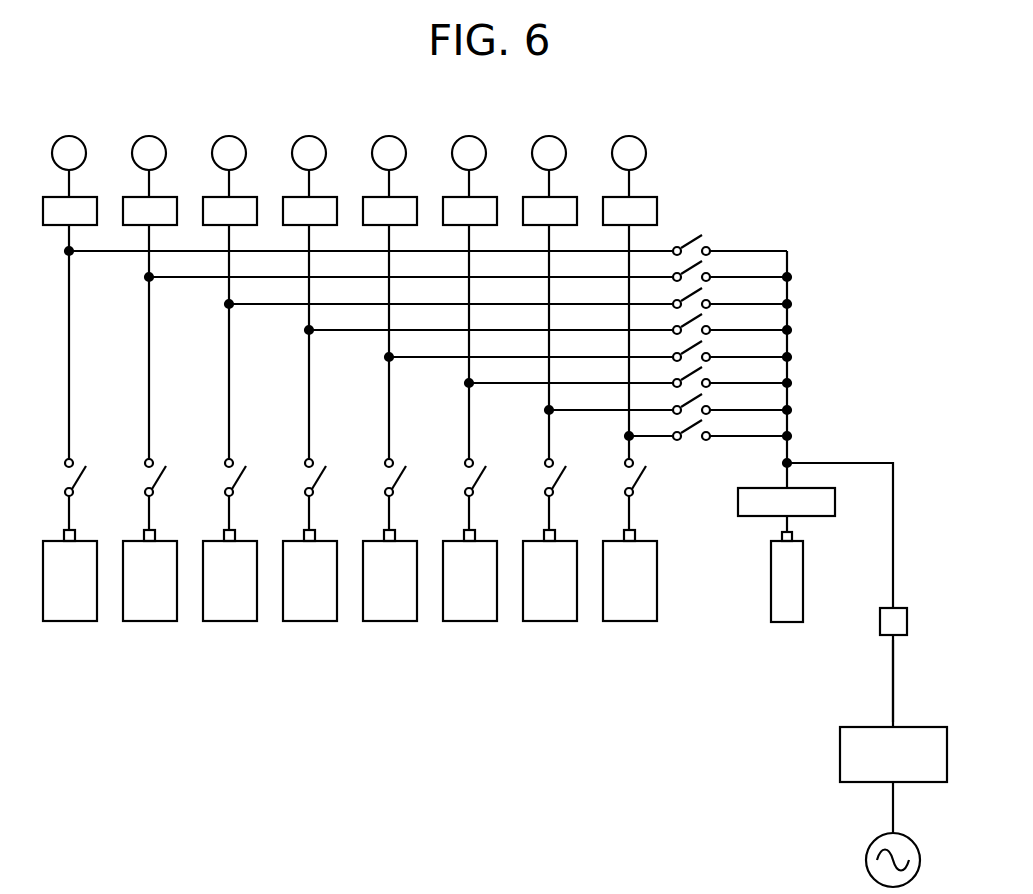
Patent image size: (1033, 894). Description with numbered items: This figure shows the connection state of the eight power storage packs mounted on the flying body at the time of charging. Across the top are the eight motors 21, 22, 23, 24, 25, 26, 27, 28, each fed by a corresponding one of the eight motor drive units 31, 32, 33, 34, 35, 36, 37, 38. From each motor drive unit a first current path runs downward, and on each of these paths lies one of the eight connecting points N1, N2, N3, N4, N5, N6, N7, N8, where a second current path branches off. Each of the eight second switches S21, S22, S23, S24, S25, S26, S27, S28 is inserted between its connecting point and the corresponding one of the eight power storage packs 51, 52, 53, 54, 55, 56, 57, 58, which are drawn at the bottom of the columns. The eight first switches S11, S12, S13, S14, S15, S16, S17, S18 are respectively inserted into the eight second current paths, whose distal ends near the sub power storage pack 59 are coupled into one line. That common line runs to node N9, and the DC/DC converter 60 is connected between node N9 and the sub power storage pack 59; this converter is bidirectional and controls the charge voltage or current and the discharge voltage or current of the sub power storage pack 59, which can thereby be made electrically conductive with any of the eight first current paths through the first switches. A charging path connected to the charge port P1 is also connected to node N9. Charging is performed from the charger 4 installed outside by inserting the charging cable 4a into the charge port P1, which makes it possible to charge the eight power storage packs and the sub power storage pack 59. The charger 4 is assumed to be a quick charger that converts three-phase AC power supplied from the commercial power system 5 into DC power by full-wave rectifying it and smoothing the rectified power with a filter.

The motor 21 is at (82, 148).
The motor 22 is at (162, 148).
The motor 23 is at (242, 148).
The motor 24 is at (322, 148).
The motor 25 is at (402, 148).
The motor 26 is at (482, 148).
The motor 27 is at (562, 148).
The motor 28 is at (642, 148).
The motor drive unit 31 is at (89, 197).
The motor drive unit 32 is at (169, 197).
The motor drive unit 33 is at (249, 197).
The motor drive unit 34 is at (329, 197).
The motor drive unit 35 is at (409, 197).
The motor drive unit 36 is at (489, 197).
The motor drive unit 37 is at (569, 197).
The motor drive unit 38 is at (649, 197).
The power storage pack 51 is at (84, 540).
The power storage pack 52 is at (164, 540).
The power storage pack 53 is at (244, 540).
The power storage pack 54 is at (324, 540).
The power storage pack 55 is at (404, 540).
The power storage pack 56 is at (484, 540).
The power storage pack 57 is at (564, 540).
The power storage pack 58 is at (644, 540).
The sub power storage pack 59 is at (803, 573).
The DC/DC converter 60 is at (757, 487).
The charger 4 is at (920, 727).
The charging cable 4a is at (895, 693).
The commercial power system 5 is at (906, 832).
The charge port P1 is at (905, 607).
The connecting point N1 is at (369, 342).
The connecting point N2 is at (409, 342).
The connecting point N3 is at (449, 342).
The connecting point N4 is at (489, 342).
The connecting point N5 is at (529, 342).
The connecting point N6 is at (569, 342).
The connecting point N7 is at (609, 342).
The connecting point N8 is at (649, 342).
The node N9 is at (838, 429).
The first switch S11 is at (730, 243).
The first switch S12 is at (732, 269).
The first switch S13 is at (732, 296).
The first switch S14 is at (732, 322).
The first switch S15 is at (732, 349).
The first switch S16 is at (732, 375).
The first switch S17 is at (732, 402).
The first switch S18 is at (732, 428).
The second switch S21 is at (58, 494).
The second switch S22 is at (138, 494).
The second switch S23 is at (218, 494).
The second switch S24 is at (298, 494).
The second switch S25 is at (378, 494).
The second switch S26 is at (458, 494).
The second switch S27 is at (538, 494).
The second switch S28 is at (618, 494).